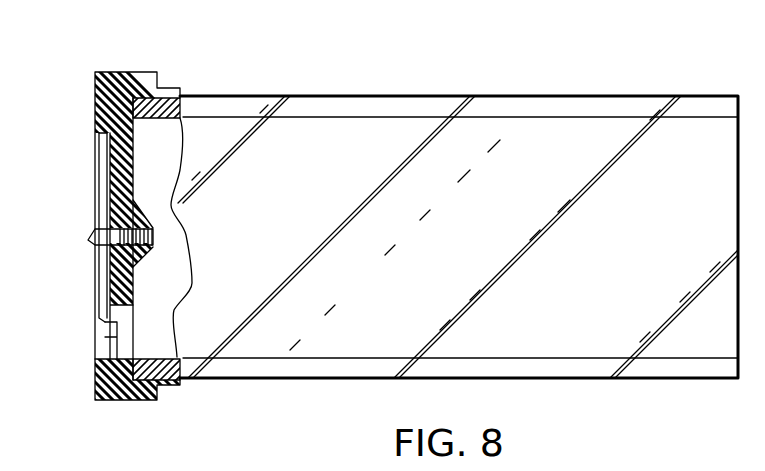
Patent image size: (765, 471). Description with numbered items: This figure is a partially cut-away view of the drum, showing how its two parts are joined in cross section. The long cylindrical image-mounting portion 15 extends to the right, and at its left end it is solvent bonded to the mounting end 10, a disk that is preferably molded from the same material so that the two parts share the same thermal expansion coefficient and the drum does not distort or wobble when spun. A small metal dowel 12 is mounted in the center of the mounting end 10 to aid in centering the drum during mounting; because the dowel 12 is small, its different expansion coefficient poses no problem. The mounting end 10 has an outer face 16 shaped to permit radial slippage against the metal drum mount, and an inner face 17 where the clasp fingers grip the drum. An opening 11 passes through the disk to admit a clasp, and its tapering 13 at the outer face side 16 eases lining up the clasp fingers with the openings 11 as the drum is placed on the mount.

The mounting end 10 is at (113, 72).
The openings 11 is at (92, 332).
The dowel 12 is at (90, 232).
The tapering 13 is at (92, 361).
The image-mounting portion 15 is at (450, 96).
The outer face 16 is at (108, 292).
The inner face 17 is at (134, 283).